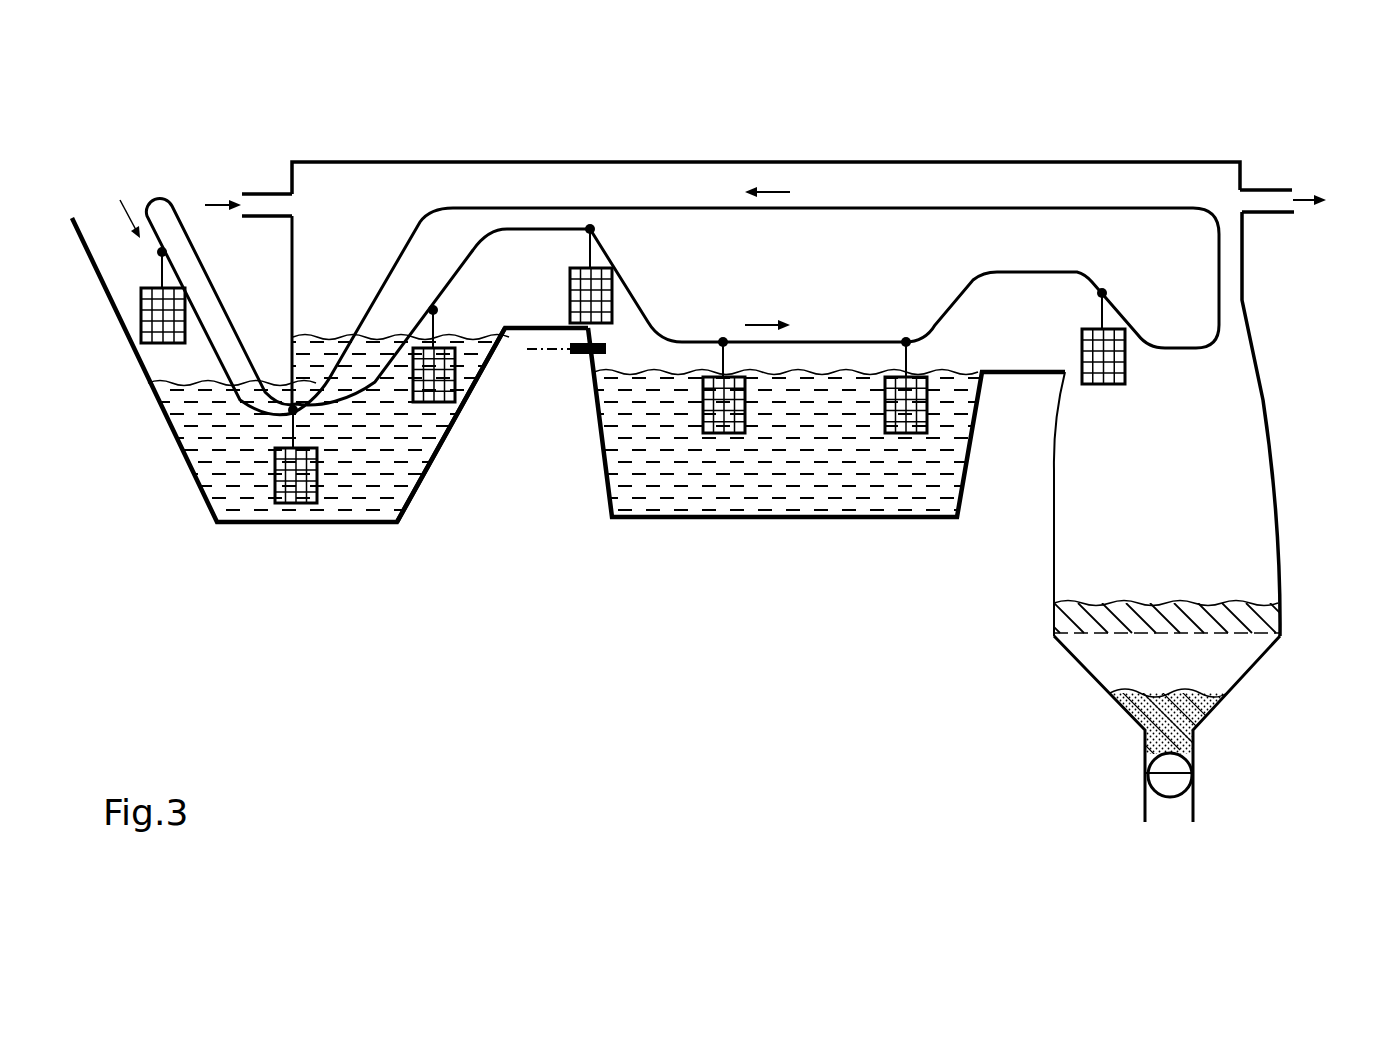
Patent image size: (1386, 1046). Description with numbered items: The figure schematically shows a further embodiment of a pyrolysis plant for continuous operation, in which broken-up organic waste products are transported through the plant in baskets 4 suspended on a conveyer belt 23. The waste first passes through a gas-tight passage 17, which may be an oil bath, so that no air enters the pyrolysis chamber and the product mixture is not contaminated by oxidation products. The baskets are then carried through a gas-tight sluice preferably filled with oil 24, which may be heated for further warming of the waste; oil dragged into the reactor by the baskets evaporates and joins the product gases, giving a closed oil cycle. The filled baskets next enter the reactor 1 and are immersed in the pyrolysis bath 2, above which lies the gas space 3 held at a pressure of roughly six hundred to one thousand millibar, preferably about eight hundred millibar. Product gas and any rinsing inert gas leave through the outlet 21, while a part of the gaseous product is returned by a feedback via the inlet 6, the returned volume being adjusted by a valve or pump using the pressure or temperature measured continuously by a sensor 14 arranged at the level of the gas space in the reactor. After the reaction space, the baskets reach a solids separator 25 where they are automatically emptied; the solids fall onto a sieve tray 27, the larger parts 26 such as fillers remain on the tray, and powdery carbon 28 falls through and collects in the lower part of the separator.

The reactor 1 is at (607, 487).
The pyrolysis bath 2 is at (627, 440).
The gas space 3 is at (844, 268).
The baskets 4 is at (138, 328).
The inlet 6 is at (250, 203).
The sensor 14 is at (583, 356).
The gas-tight passage 17 is at (197, 487).
The outlet 21 is at (1287, 198).
The conveyer belt 23 is at (160, 198).
The oil 24 is at (415, 488).
The solids separator 25 is at (1283, 456).
The larger parts 26 is at (1257, 620).
The sieve tray 27 is at (1237, 634).
The powdery carbon 28 is at (1212, 708).